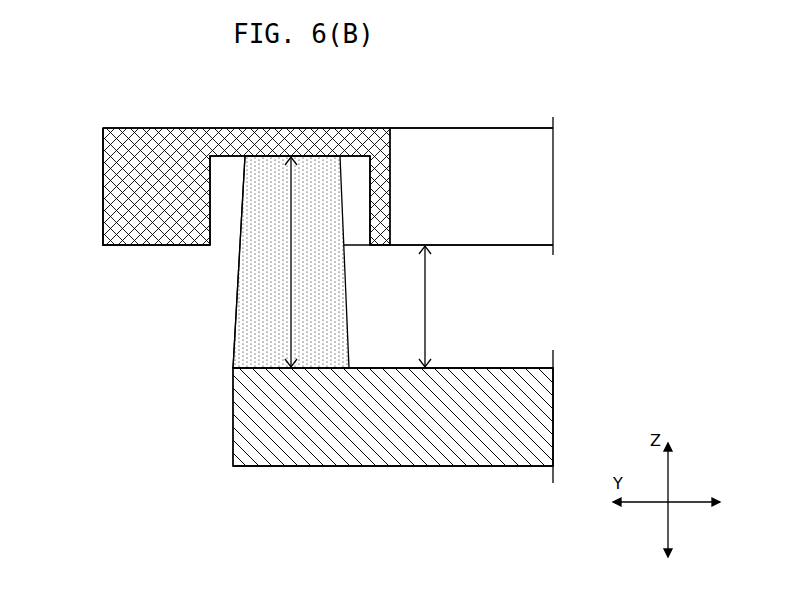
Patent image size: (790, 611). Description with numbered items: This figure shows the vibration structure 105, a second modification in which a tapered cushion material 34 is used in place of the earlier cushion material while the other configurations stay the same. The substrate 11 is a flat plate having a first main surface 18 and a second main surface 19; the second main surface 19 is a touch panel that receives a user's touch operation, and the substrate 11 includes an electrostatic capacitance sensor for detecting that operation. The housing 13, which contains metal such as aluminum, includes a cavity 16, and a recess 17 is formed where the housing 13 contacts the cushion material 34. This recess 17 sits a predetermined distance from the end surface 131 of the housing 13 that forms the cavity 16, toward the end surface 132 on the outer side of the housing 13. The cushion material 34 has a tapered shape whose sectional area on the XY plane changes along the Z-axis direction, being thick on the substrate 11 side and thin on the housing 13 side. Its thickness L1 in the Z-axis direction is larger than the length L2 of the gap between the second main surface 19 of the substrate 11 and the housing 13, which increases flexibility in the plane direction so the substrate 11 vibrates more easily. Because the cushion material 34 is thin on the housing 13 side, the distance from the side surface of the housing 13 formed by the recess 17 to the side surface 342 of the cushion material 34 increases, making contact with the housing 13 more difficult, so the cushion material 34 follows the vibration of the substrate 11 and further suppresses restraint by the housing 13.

The vibration structure 105 is at (122, 93).
The housing 13 is at (145, 128).
The end surface 131 is at (392, 162).
The end surface 132 is at (103, 232).
The cushion material 34 is at (236, 303).
The side surface 342 is at (241, 216).
The cavity 16 is at (491, 163).
The recess 17 is at (362, 241).
The second main surface 19 is at (520, 366).
The substrate 11 is at (345, 467).
The first main surface 18 is at (441, 469).
The thickness of the cushion material L1 is at (290, 310).
The length of the gap L2 is at (427, 300).